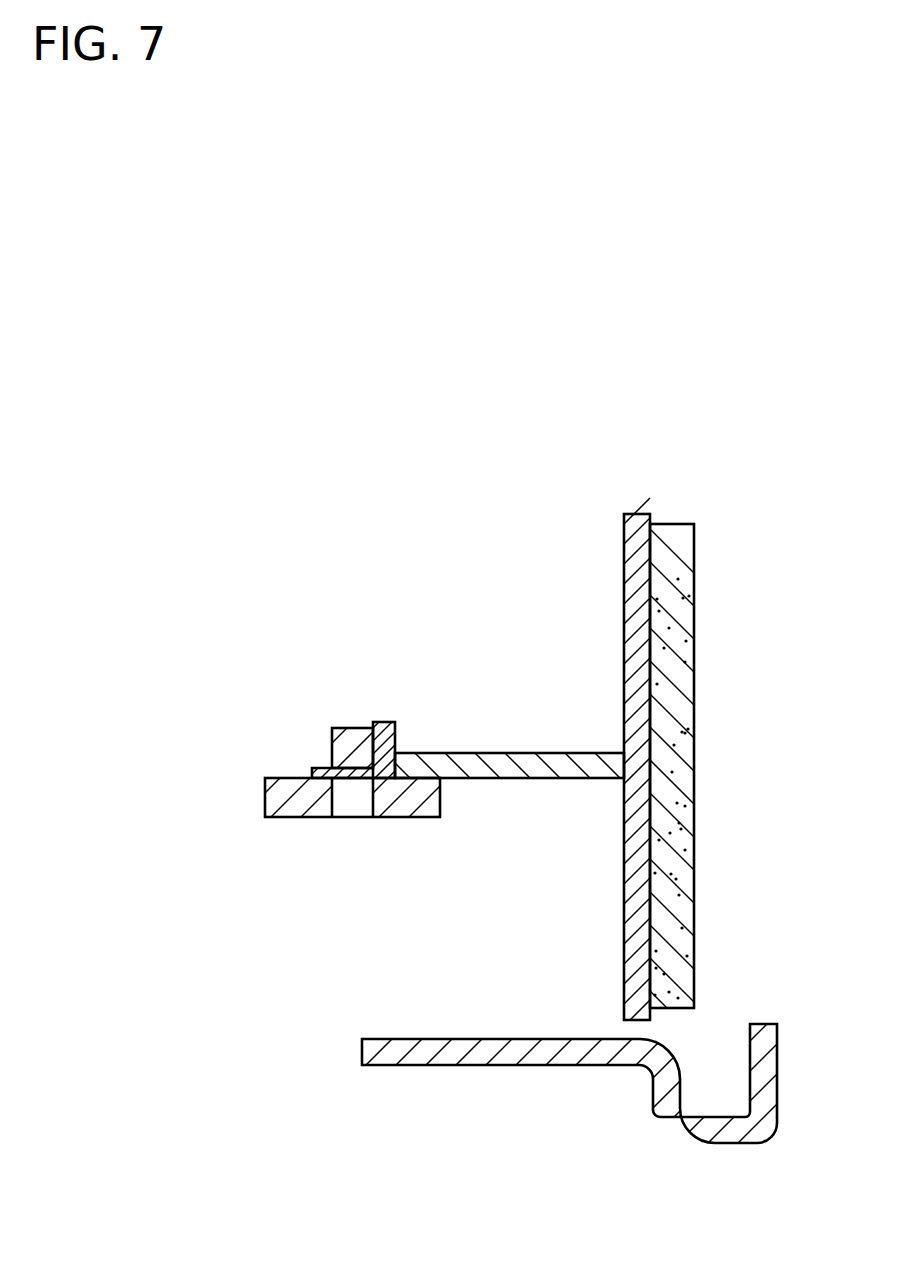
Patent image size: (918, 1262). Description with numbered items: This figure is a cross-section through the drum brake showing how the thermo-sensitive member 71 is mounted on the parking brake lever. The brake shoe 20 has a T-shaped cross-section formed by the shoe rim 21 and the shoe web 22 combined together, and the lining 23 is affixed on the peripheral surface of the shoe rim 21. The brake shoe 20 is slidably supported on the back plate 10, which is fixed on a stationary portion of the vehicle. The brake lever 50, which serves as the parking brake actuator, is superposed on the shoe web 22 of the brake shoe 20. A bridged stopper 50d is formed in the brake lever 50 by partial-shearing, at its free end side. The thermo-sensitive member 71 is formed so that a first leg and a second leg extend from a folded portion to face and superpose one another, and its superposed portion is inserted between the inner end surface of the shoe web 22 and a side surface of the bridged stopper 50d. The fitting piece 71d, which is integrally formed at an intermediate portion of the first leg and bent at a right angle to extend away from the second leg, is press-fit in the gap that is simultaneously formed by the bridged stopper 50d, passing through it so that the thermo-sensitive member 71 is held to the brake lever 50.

The back plate 10 is at (523, 1068).
The brake shoe 20 is at (713, 726).
The shoe rim 21 is at (642, 513).
The shoe web 22 is at (550, 752).
The lining 23 is at (695, 552).
The brake lever 50 is at (403, 820).
The bridged stopper 50d is at (347, 728).
The thermo-sensitive member 71 is at (388, 722).
The fitting piece 71d is at (310, 774).